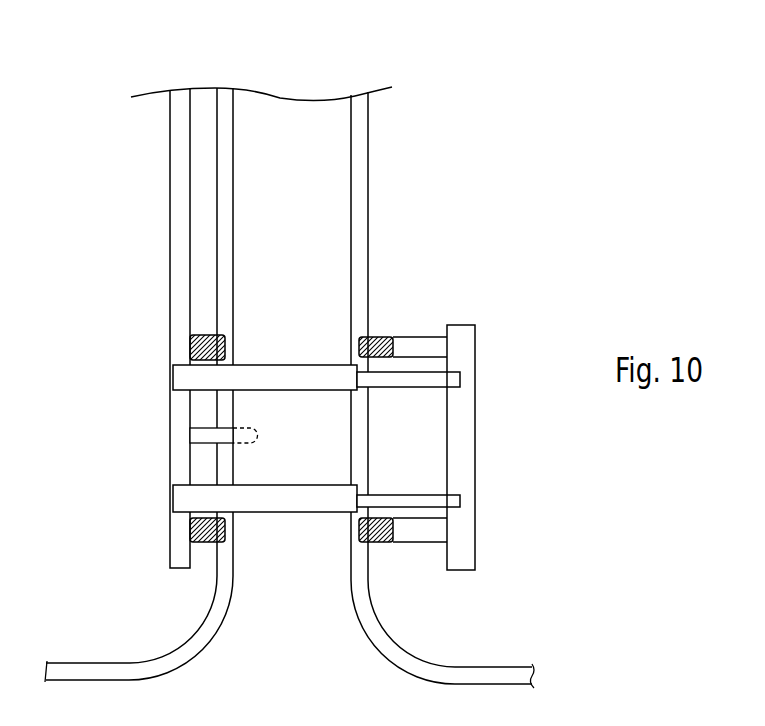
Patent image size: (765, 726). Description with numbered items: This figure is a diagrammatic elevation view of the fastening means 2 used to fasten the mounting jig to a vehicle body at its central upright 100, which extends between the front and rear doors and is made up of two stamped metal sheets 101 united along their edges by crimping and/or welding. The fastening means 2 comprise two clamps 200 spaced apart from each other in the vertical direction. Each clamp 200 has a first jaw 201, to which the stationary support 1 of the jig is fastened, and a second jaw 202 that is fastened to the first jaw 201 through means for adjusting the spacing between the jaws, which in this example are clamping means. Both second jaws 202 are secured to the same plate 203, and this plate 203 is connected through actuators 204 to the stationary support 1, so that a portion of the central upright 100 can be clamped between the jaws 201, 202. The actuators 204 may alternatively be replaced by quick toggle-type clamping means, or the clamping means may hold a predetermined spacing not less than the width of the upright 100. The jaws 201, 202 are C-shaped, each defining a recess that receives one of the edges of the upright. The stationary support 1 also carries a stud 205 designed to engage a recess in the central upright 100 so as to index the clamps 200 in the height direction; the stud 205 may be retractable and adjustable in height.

The stationary support 1 is at (180, 410).
The fastening means 2 is at (480, 410).
The central upright 100 is at (313, 187).
The stamped metal sheets 101 is at (272, 108).
The clamp 200 is at (388, 313).
The first jaw 201 is at (190, 337).
The second jaw 202 is at (375, 357).
The plate 203 is at (466, 440).
The actuators 204 is at (200, 378).
The stud 205 is at (205, 437).